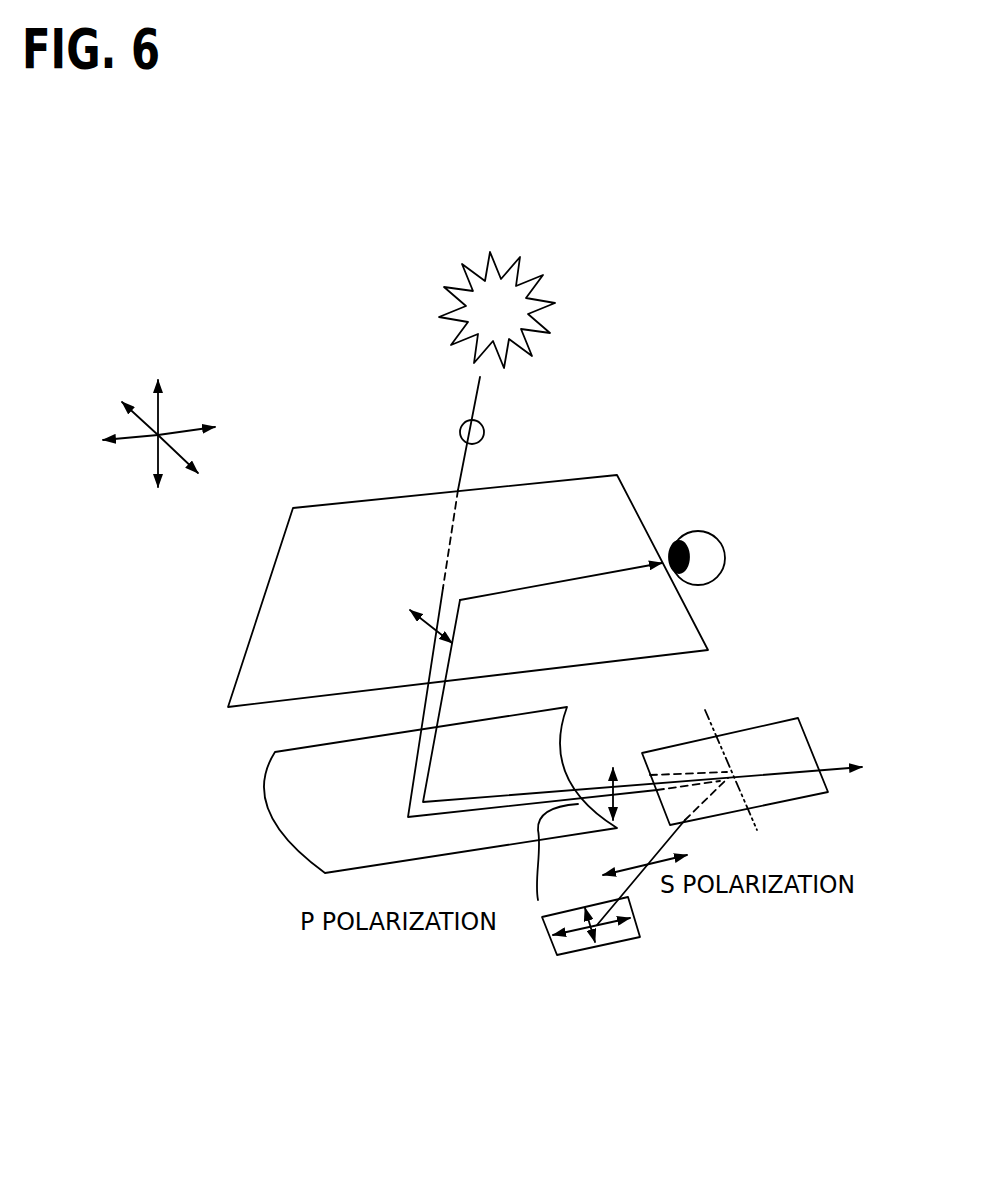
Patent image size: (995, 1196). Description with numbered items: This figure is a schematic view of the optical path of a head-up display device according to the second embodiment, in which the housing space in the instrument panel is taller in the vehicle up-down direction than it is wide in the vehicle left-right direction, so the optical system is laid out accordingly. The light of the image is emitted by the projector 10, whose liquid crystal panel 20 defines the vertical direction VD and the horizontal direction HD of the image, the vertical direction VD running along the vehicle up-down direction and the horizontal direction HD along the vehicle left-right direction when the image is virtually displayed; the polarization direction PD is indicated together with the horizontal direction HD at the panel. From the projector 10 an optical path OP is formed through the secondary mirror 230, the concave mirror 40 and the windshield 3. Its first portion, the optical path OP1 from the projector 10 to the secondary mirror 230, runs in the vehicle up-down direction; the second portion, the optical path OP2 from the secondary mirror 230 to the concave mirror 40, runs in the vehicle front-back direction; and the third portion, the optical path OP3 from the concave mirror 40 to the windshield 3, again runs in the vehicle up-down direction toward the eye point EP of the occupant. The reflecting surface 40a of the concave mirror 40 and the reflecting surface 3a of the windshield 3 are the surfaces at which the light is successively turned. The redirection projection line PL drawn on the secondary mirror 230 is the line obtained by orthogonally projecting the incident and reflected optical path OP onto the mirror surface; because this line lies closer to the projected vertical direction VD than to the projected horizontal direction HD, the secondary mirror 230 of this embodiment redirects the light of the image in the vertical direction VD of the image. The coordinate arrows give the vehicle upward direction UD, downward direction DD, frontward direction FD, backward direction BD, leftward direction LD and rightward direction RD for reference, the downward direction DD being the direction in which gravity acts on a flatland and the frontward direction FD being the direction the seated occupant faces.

The windshield 3 is at (450, 591).
The reflection surface of combiner 3a is at (338, 556).
The concave mirror 40 is at (385, 790).
The reflection surface of mirror 40a is at (310, 785).
The secondary mirror 230 is at (808, 730).
The projector 10 is at (632, 940).
The liquid crystal panel 20 is at (579, 963).
The eye point EP is at (705, 531).
The redirection projection line PL is at (712, 716).
The optical path OP is at (609, 744).
The optical path from the projector to the secondary mirror OP1 is at (672, 835).
The optical path from the secondary mirror to the concave mirror OP2 is at (455, 802).
The optical path from the concave mirror to the windshield OP3 is at (450, 663).
The horizontal direction of the image HD is at (567, 938).
The polarization direction PD is at (556, 958).
The vertical direction of the image VD is at (585, 938).
The vehicle upward direction UD is at (157, 390).
The vehicle downward direction DD is at (156, 479).
The vehicle leftward direction LD is at (114, 444).
The vehicle rightward direction RD is at (203, 426).
The vehicle frontward direction FD is at (126, 402).
The vehicle backward direction BD is at (195, 465).